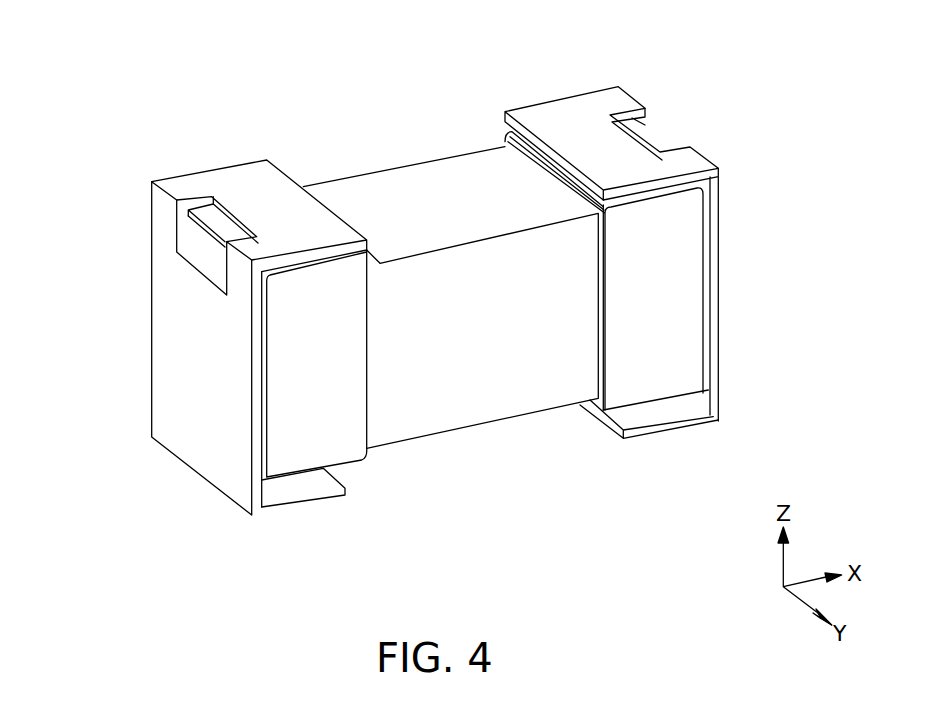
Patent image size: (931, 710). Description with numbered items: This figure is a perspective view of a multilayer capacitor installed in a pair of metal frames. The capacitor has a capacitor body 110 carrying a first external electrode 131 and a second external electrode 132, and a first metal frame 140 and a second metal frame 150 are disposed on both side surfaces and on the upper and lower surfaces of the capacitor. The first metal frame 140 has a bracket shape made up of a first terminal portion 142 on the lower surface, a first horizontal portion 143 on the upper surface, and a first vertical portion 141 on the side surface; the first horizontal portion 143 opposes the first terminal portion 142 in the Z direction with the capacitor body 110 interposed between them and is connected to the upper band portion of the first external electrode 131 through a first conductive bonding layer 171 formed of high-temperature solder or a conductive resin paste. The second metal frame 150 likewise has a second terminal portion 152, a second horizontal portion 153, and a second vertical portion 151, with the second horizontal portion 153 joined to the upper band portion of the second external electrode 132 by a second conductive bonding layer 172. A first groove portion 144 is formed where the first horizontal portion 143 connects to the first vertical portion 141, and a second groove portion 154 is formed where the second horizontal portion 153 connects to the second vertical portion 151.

The capacitor body 110 is at (418, 185).
The first external electrode 131 is at (337, 444).
The second external electrode 132 is at (686, 374).
The first metal frame 140 is at (210, 334).
The first vertical portion 141 is at (150, 408).
The first terminal portion 142 is at (293, 503).
The first horizontal portion 143 is at (247, 177).
The first groove portion 144 is at (160, 234).
The second metal frame 150 is at (672, 268).
The second vertical portion 151 is at (722, 304).
The second terminal portion 152 is at (642, 432).
The second horizontal portion 153 is at (553, 116).
The second groove portion 154 is at (663, 143).
The first conductive bonding layer 171 is at (211, 196).
The second conductive bonding layer 172 is at (505, 134).